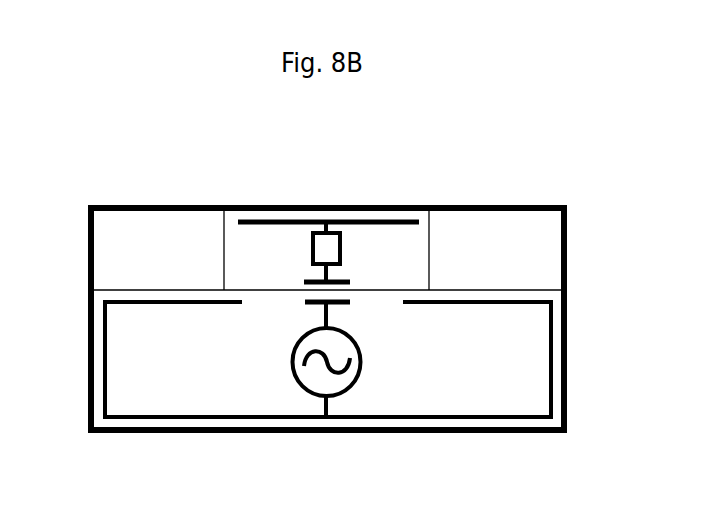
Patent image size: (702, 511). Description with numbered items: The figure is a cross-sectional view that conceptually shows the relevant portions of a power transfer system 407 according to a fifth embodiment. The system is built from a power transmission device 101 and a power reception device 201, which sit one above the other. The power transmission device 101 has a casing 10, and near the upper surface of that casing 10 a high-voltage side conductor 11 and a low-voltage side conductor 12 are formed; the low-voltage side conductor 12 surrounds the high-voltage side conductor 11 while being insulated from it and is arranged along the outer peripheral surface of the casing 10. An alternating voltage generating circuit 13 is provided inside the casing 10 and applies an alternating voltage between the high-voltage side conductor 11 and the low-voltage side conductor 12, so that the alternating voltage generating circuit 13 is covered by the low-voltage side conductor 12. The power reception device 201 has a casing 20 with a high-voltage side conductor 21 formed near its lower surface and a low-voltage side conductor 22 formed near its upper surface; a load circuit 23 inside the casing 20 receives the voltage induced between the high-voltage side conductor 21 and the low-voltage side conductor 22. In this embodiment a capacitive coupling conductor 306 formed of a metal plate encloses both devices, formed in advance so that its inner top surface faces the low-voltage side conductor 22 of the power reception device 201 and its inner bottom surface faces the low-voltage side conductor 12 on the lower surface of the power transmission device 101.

The capacitive coupling conductor 306 is at (563, 207).
The power transfer system 407 is at (479, 185).
The casing 10 is at (508, 291).
The power transmission device 101 is at (151, 287).
The power reception device 201 is at (214, 247).
The casing 20 is at (430, 255).
The low-voltage side conductor 22 is at (302, 216).
The load circuit 23 is at (313, 248).
The high-voltage side conductor 21 is at (342, 281).
The high-voltage side conductor 11 is at (306, 303).
The alternating voltage generating circuit 13 is at (362, 357).
The low-voltage side conductor 12 is at (553, 357).